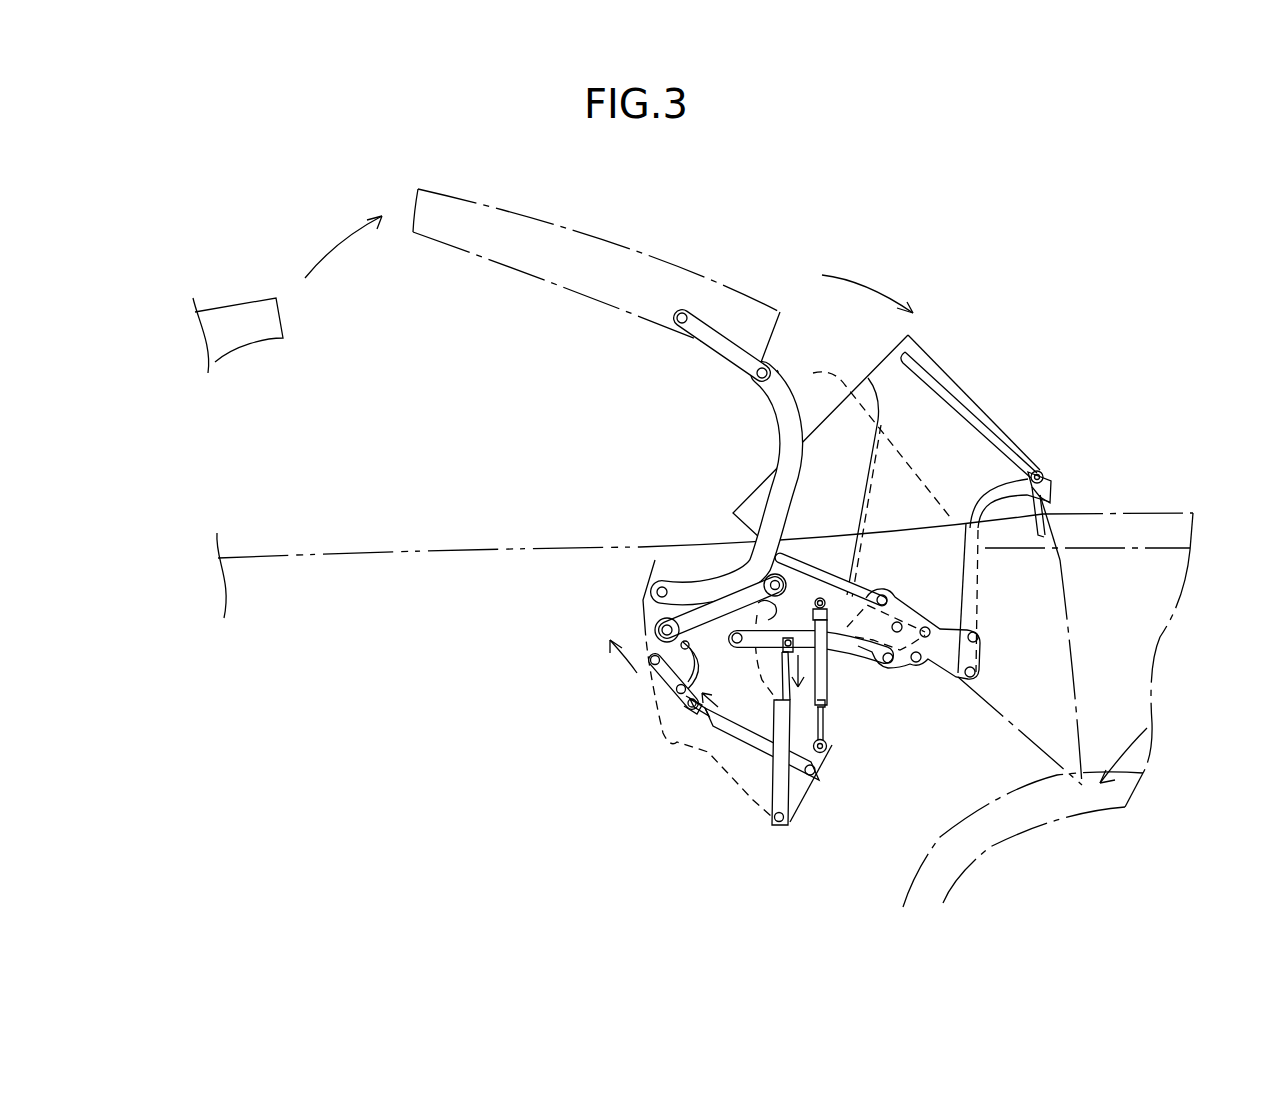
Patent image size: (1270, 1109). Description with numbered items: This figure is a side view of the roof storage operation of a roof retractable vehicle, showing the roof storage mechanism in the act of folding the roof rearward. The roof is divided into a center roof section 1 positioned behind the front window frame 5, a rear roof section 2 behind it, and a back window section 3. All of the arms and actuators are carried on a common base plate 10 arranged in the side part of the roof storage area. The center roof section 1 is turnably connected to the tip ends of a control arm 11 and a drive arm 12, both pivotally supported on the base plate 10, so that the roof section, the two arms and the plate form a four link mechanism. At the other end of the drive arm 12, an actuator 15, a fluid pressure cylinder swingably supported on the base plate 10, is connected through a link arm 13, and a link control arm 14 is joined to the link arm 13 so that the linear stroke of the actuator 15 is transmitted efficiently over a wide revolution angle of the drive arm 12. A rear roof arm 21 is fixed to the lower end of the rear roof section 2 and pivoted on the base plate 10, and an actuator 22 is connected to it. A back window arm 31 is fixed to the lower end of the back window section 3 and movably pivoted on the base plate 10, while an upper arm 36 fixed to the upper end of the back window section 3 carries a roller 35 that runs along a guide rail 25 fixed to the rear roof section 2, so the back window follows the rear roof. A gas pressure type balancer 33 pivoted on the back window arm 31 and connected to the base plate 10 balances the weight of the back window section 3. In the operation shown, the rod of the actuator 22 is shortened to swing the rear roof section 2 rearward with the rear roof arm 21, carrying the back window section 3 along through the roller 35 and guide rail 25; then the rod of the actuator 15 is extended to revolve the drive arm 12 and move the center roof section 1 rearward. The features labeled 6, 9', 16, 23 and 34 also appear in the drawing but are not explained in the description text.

The center roof section 1 is at (613, 258).
The rear roof section 2 is at (932, 357).
The back window section 3 is at (1067, 622).
The front window frame 5 is at (244, 312).
The belt line 6 is at (427, 499).
The phantom position of panel 9' is at (866, 535).
The base plate 10 is at (690, 740).
The control arm 11 is at (702, 577).
The drive arm 12 is at (652, 597).
The link arm 13 is at (680, 693).
The link control arm 14 is at (663, 667).
The actuator 15 is at (733, 730).
The pivot joint 16 is at (677, 742).
The rear roof arm 21 is at (902, 605).
The actuator 22 is at (770, 807).
The gas spring cylinder 23 is at (827, 703).
The guide rail 25 is at (960, 413).
The back window arm 31 is at (800, 590).
The gas pressure type balancer 33 is at (827, 667).
The piston rod 34 is at (830, 750).
The roller 35 is at (1040, 467).
The upper arm 36 is at (1050, 502).